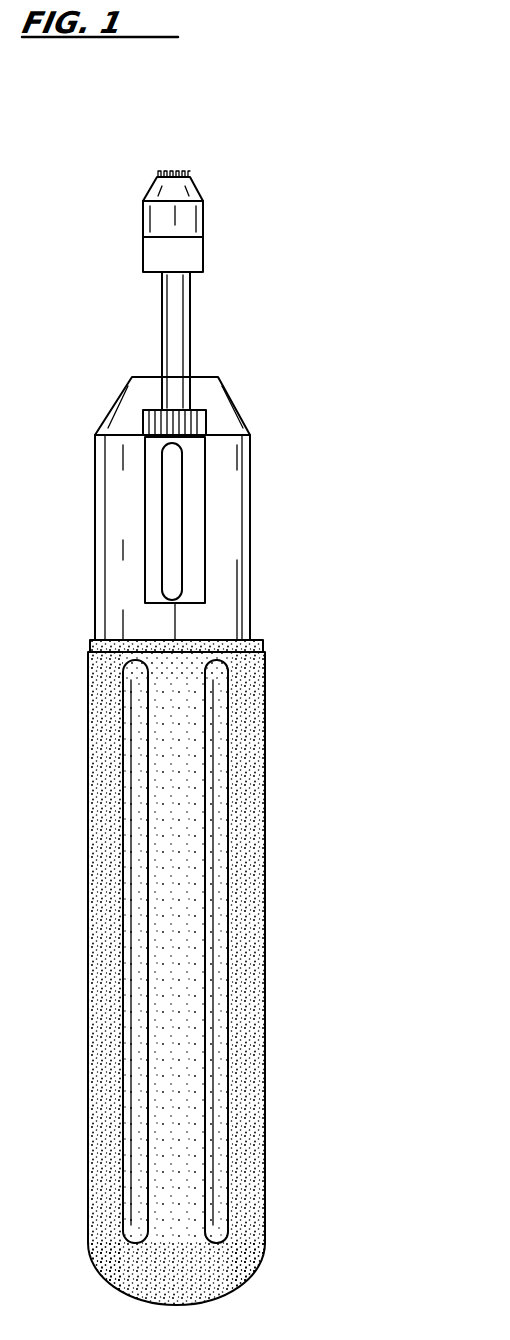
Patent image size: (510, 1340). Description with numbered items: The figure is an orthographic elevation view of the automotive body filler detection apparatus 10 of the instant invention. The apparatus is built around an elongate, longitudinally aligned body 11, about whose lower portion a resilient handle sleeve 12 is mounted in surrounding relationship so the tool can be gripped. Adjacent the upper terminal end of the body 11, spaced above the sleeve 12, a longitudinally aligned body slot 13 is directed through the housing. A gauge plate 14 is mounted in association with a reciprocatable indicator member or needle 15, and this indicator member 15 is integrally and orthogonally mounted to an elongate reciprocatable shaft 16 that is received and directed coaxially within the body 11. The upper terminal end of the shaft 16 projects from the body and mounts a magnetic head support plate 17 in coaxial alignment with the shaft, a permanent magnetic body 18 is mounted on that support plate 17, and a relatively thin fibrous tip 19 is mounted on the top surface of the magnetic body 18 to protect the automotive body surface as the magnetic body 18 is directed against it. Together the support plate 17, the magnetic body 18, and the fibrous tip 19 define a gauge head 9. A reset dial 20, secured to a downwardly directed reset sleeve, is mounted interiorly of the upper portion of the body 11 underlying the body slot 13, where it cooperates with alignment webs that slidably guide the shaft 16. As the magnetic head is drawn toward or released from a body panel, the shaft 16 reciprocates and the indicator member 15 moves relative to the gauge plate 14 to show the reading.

The gauge head 9 is at (147, 197).
The automotive body filler detection apparatus 10 is at (322, 397).
The elongate longitudinally aligned body 11 is at (220, 620).
The resilient handle sleeve 12 is at (258, 748).
The body slot 13 is at (170, 542).
The gauge plate 14 is at (195, 508).
The indicator member 15 is at (172, 456).
The reciprocatable shaft 16 is at (180, 338).
The magnetic head support plate 17 is at (188, 249).
The permanent magnetic body 18 is at (188, 214).
The fibrous tip 19 is at (188, 178).
The reset dial 20 is at (207, 424).